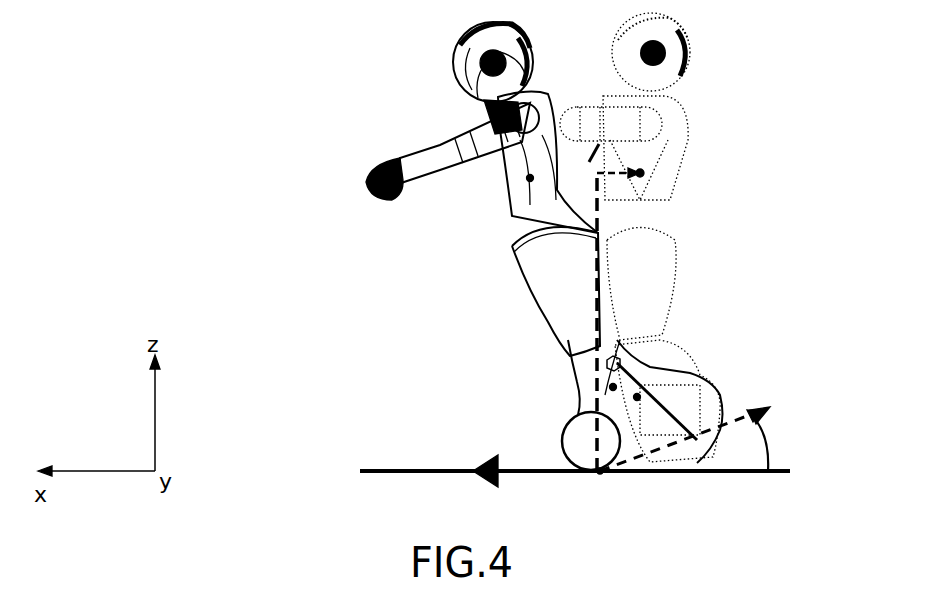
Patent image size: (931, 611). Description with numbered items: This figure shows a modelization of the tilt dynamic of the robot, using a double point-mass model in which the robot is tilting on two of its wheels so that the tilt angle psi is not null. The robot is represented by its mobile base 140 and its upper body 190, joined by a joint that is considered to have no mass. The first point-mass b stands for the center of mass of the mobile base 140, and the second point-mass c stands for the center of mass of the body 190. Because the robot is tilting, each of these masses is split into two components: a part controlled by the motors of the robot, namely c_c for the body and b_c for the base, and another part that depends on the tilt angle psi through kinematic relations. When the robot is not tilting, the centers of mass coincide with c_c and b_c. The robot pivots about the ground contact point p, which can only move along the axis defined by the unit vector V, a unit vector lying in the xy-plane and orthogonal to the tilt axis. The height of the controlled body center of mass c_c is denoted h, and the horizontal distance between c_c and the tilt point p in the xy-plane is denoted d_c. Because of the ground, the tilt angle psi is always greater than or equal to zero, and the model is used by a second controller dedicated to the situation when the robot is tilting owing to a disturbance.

The body 190 is at (455, 248).
The mobile base 140 is at (558, 398).
The tilt contact point p is at (603, 484).
The height of c_c h is at (586, 322).
The upper body center of mass c is at (538, 169).
The mobile base center of mass b is at (606, 394).
The controlled mobile base center of mass bc is at (649, 407).
The controlled upper body center of mass cc is at (652, 167).
The horizontal distance between c_c and p dc is at (618, 160).
The tilt angle psi is at (692, 439).
The unit vector v_psi V is at (536, 481).